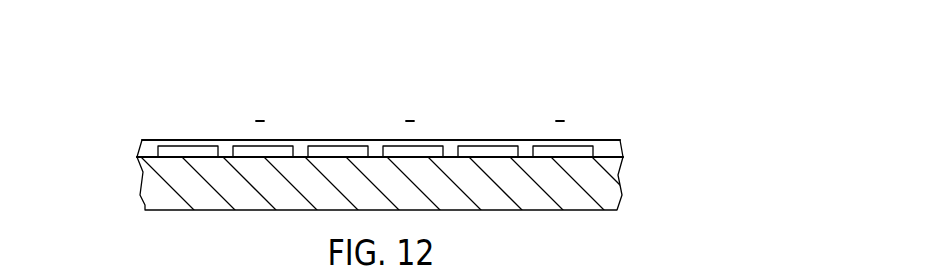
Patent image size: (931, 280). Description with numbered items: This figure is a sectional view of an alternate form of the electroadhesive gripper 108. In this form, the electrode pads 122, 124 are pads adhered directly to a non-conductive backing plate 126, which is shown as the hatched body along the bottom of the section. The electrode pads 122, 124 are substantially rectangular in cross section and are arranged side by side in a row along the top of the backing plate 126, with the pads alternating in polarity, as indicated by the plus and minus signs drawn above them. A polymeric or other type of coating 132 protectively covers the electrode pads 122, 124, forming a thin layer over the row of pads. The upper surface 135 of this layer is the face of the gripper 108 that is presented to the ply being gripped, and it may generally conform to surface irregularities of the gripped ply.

The gripper 108 is at (128, 143).
The electrode pad 122 is at (208, 152).
The electrode pad 124 is at (285, 152).
The backing plate 126 is at (228, 185).
The coating 132 is at (152, 147).
The surface 135 is at (174, 136).